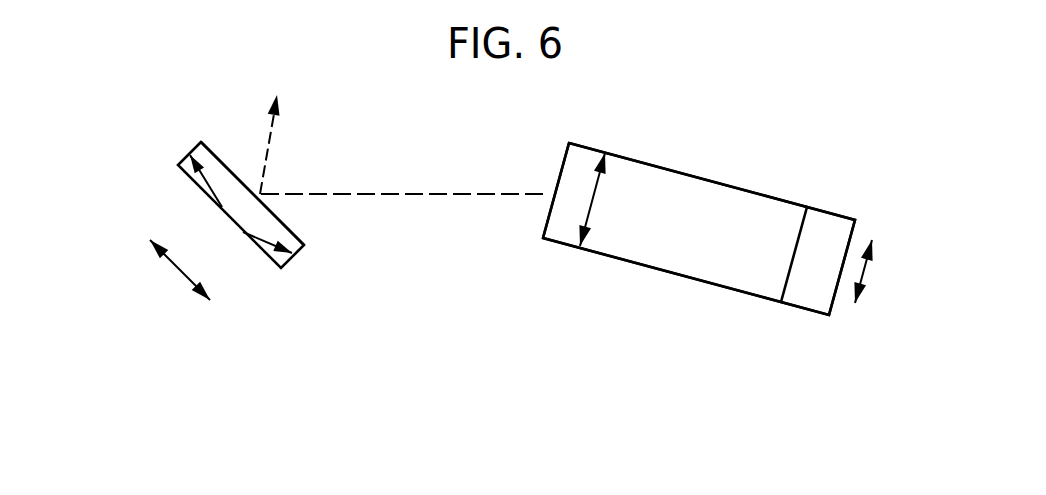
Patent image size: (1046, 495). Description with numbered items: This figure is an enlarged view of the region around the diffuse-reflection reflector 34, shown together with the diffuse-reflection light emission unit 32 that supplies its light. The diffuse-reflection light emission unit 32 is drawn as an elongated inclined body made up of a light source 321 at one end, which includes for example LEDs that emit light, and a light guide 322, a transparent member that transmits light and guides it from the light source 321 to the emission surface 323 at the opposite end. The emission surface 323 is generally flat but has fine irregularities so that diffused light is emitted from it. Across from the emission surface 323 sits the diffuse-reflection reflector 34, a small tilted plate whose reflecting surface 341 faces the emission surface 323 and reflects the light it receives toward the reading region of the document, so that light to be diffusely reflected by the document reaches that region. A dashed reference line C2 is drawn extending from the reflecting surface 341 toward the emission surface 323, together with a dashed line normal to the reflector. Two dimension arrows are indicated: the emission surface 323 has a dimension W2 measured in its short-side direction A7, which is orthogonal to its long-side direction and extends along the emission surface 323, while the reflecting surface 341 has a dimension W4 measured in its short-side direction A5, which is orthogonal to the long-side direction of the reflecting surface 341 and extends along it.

The diffuse-reflection light emission unit 32 is at (796, 373).
The light source 321 is at (805, 293).
The light guide 322 is at (700, 265).
The emission surface 323 is at (548, 212).
The diffuse-reflection reflector 34 is at (304, 247).
The reflecting surface 341 is at (217, 156).
The normal axis C2 is at (272, 135).
The dimension W2 is at (615, 199).
The dimension W4 is at (241, 204).
The short-side direction A5 is at (171, 274).
The short-side direction A7 is at (887, 271).